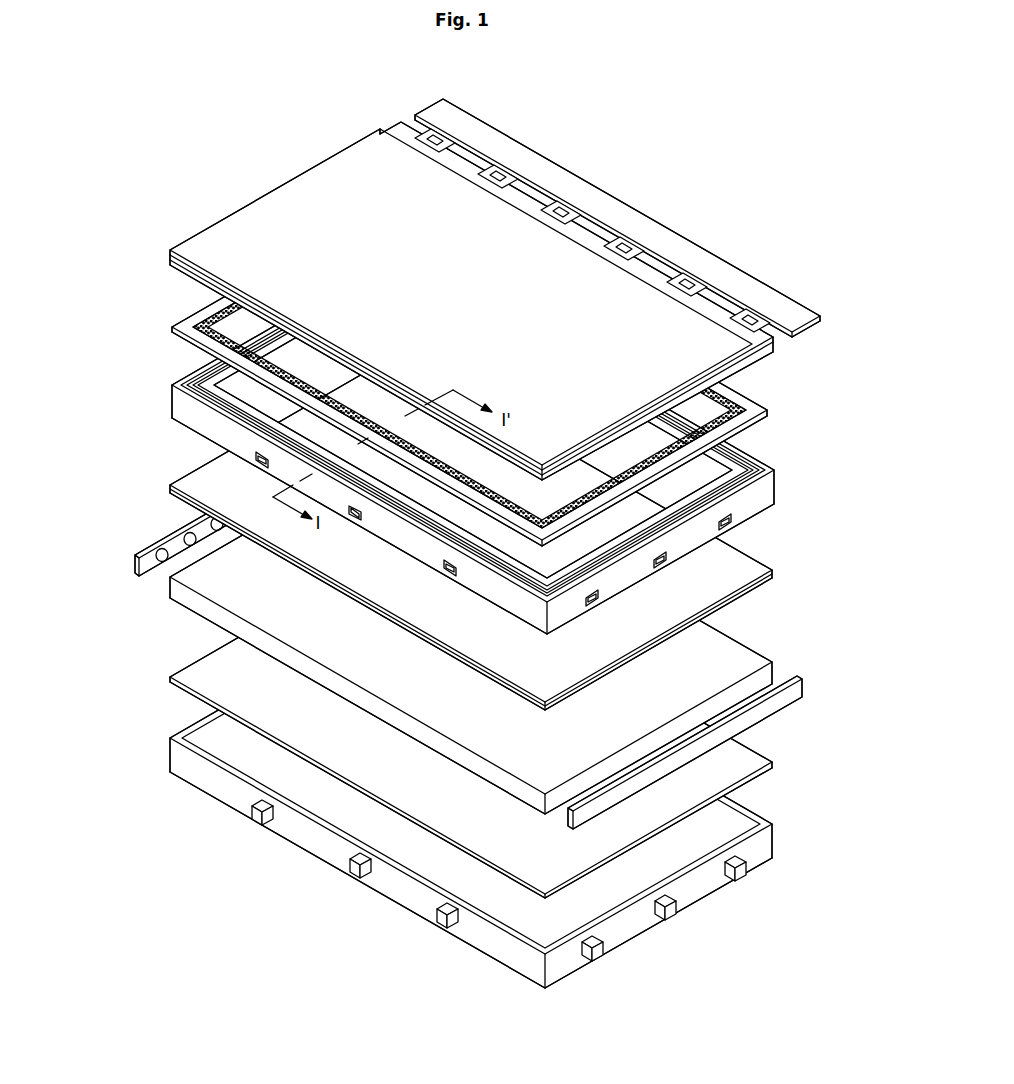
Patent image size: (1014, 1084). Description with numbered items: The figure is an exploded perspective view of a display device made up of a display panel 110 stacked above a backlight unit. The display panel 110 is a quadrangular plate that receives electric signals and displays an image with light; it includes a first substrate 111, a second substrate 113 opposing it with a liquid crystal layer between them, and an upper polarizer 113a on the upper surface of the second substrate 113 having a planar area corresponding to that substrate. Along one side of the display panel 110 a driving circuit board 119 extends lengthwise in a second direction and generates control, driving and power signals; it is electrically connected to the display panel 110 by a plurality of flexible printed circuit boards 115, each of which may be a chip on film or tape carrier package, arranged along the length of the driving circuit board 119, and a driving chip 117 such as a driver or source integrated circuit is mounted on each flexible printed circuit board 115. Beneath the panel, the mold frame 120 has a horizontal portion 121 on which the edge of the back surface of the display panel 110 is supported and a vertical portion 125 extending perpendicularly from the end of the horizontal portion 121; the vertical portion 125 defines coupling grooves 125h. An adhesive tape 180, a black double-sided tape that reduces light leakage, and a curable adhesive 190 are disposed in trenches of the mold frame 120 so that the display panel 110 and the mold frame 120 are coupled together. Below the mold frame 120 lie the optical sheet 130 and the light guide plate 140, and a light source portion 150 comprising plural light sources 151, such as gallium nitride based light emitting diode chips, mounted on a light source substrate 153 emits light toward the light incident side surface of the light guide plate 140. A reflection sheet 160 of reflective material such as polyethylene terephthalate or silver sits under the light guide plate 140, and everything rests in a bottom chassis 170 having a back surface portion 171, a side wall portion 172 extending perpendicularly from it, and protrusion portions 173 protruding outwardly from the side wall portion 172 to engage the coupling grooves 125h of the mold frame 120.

The display panel 110 is at (535, 289).
The first substrate 111 is at (758, 342).
The second substrate 113 is at (738, 369).
The upper polarizer 113a is at (697, 369).
The flexible printed circuit board 115 is at (762, 300).
The driving chip 117 is at (697, 274).
The driving circuit board 119 is at (786, 309).
The mold frame 120 is at (405, 444).
The horizontal portion 121 is at (176, 375).
The vertical portion 125 is at (160, 401).
The coupling groove 125h is at (256, 457).
The optical sheet 130 is at (783, 572).
The light guide plate 140 is at (738, 642).
The light source portion 150 is at (442, 649).
The light source 151 is at (160, 562).
The light source substrate 153 is at (797, 680).
The reflection sheet 160 is at (747, 755).
The bottom chassis 170 is at (531, 797).
The back surface portion 171 is at (708, 829).
The side wall portion 172 is at (765, 843).
The protrusion portion 173 is at (847, 802).
The adhesive tape 180 is at (213, 310).
The curable adhesive 190 is at (440, 371).